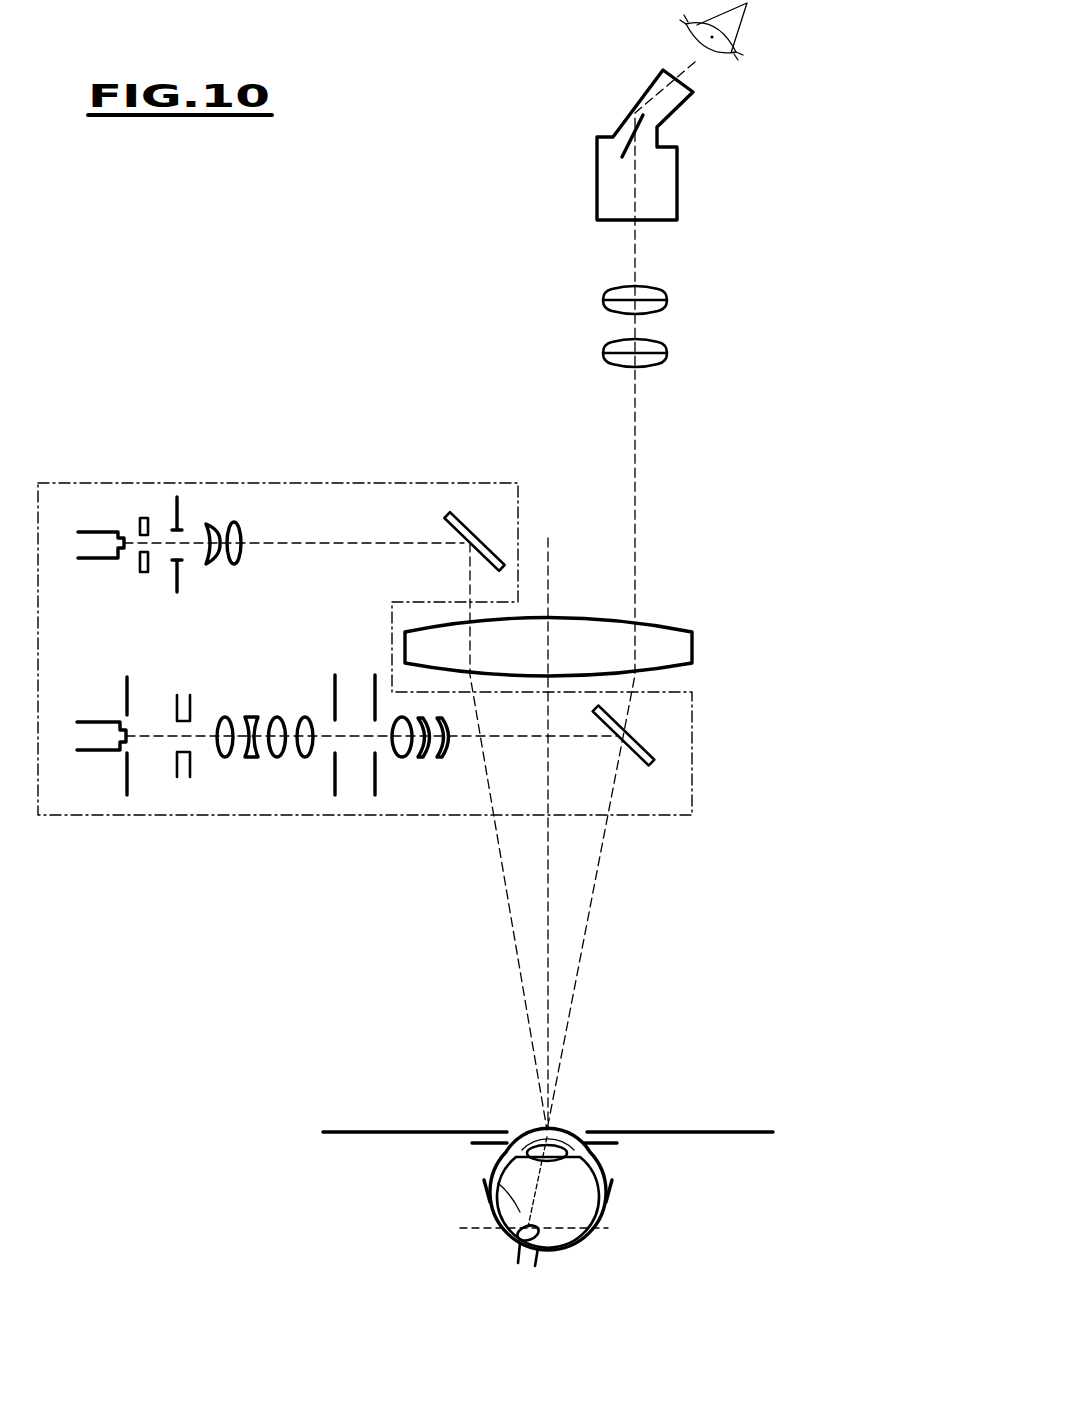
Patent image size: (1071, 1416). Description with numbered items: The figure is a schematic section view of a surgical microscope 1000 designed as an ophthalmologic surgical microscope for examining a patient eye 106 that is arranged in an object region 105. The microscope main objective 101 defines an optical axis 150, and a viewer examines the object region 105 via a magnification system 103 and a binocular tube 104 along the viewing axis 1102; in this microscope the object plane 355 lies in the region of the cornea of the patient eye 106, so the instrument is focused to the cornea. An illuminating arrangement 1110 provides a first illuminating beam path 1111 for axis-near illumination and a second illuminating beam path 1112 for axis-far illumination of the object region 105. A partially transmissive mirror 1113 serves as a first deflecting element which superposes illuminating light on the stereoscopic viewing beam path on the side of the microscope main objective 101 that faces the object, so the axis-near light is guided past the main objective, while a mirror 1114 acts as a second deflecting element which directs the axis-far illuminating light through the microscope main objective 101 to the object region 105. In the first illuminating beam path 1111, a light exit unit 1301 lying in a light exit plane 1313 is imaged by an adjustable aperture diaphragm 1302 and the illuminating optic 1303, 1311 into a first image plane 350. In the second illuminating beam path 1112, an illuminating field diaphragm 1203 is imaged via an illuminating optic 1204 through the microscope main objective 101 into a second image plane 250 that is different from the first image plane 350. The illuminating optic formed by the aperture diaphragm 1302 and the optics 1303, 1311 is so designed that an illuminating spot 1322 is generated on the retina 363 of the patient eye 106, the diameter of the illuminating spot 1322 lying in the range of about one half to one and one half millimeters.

The surgical microscope 1000 is at (316, 286).
The binocular tube 104 is at (663, 185).
The observation optical axis 1102 is at (635, 257).
The magnification system 103 is at (669, 327).
The illuminating arrangement 1110 is at (98, 482).
The illuminating field diaphragm 1203 is at (177, 505).
The illuminating optic 1204 is at (200, 515).
The second illuminating beam path 1112 is at (370, 543).
The mirror 1114 is at (460, 523).
The optical axis 150 is at (548, 567).
The microscope main objective 101 is at (692, 653).
The mirror 1113 is at (643, 748).
The light exit unit 1301 is at (158, 737).
The light exit plane 1313 is at (127, 775).
The first illuminating beam path 1111 is at (138, 758).
The adjustable aperture diaphragm 1302 is at (183, 770).
The illuminating optic 1303 is at (315, 766).
The illuminating optic 1311 is at (452, 769).
The object region 105 is at (577, 1105).
The object plane 355 is at (687, 1131).
The second image plane 250 is at (612, 1150).
The retina 363 is at (495, 1180).
The first image plane 350 is at (458, 1211).
The patient eye 106 is at (593, 1227).
The illuminating spot 1322 is at (523, 1242).